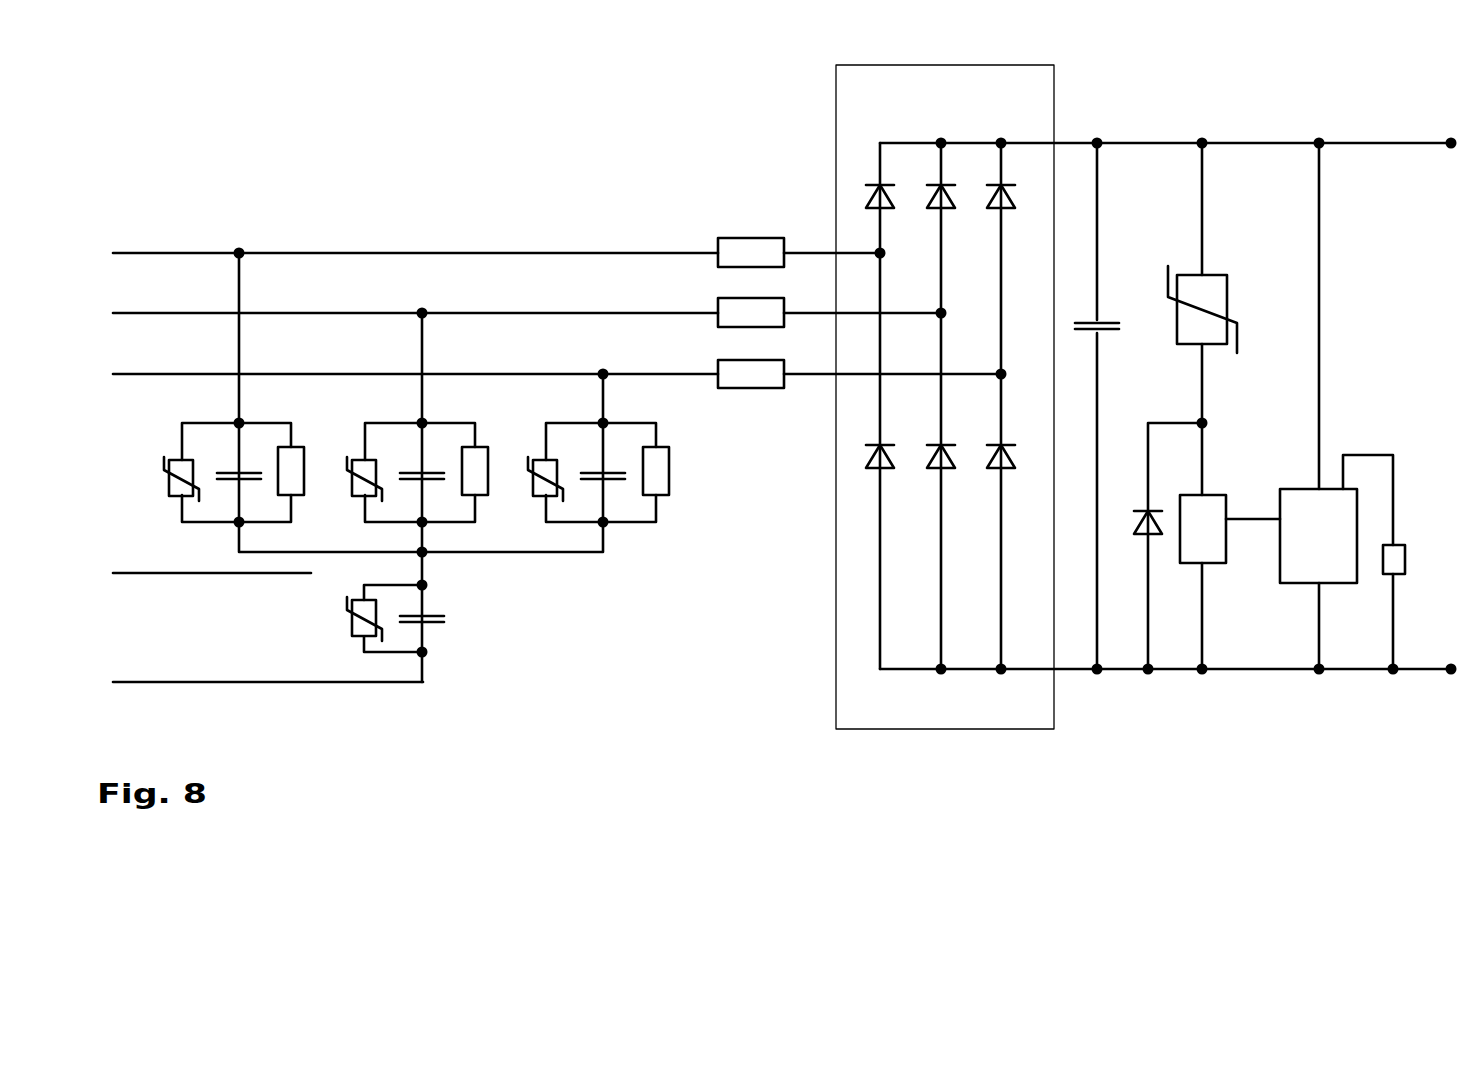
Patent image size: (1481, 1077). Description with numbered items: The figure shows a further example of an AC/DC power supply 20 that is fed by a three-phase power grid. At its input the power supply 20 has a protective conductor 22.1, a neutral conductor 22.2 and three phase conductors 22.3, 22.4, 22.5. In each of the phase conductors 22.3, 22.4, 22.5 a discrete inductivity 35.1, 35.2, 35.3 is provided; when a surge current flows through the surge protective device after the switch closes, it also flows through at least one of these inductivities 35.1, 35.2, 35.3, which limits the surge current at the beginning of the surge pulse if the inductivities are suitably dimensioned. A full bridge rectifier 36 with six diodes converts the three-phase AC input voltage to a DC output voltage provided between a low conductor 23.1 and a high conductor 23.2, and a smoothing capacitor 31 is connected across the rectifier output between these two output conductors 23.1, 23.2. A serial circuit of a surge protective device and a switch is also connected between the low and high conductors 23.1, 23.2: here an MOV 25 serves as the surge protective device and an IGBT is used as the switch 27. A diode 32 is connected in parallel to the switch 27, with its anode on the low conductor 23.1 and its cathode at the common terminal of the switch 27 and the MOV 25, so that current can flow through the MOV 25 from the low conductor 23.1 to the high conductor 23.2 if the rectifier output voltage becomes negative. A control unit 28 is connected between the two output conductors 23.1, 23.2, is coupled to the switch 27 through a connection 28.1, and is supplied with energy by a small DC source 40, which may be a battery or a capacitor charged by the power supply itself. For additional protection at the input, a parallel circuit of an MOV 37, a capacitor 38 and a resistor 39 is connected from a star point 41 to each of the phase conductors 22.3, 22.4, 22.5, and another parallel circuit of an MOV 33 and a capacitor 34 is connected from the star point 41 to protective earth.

The AC/DC power supply 20 is at (305, 122).
The protective conductor 22.1 is at (142, 682).
The neutral conductor 22.2 is at (142, 573).
The phase conductor 22.3 is at (142, 374).
The phase conductor 22.4 is at (142, 313).
The phase conductor 22.5 is at (142, 253).
The low conductor 23.1 is at (1420, 672).
The high conductor 23.2 is at (1423, 142).
The MOV 25 is at (1202, 309).
The switch 27 is at (1203, 529).
The control unit 28 is at (1318, 406).
The control connection 28.1 is at (1263, 517).
The smoothing capacitor 31 is at (1112, 322).
The diode 32 is at (1142, 508).
The MOV 33 is at (350, 612).
The capacitor 34 is at (448, 616).
The inductivity 35.1 is at (718, 363).
The inductivity 35.2 is at (718, 302).
The inductivity 35.3 is at (718, 242).
The full bridge rectifier 36 is at (1143, 397).
The MOV 37 is at (175, 458).
The capacitor 38 is at (232, 472).
The resistor 39 is at (299, 447).
The DC source 40 is at (1407, 554).
The star point 41 is at (428, 556).